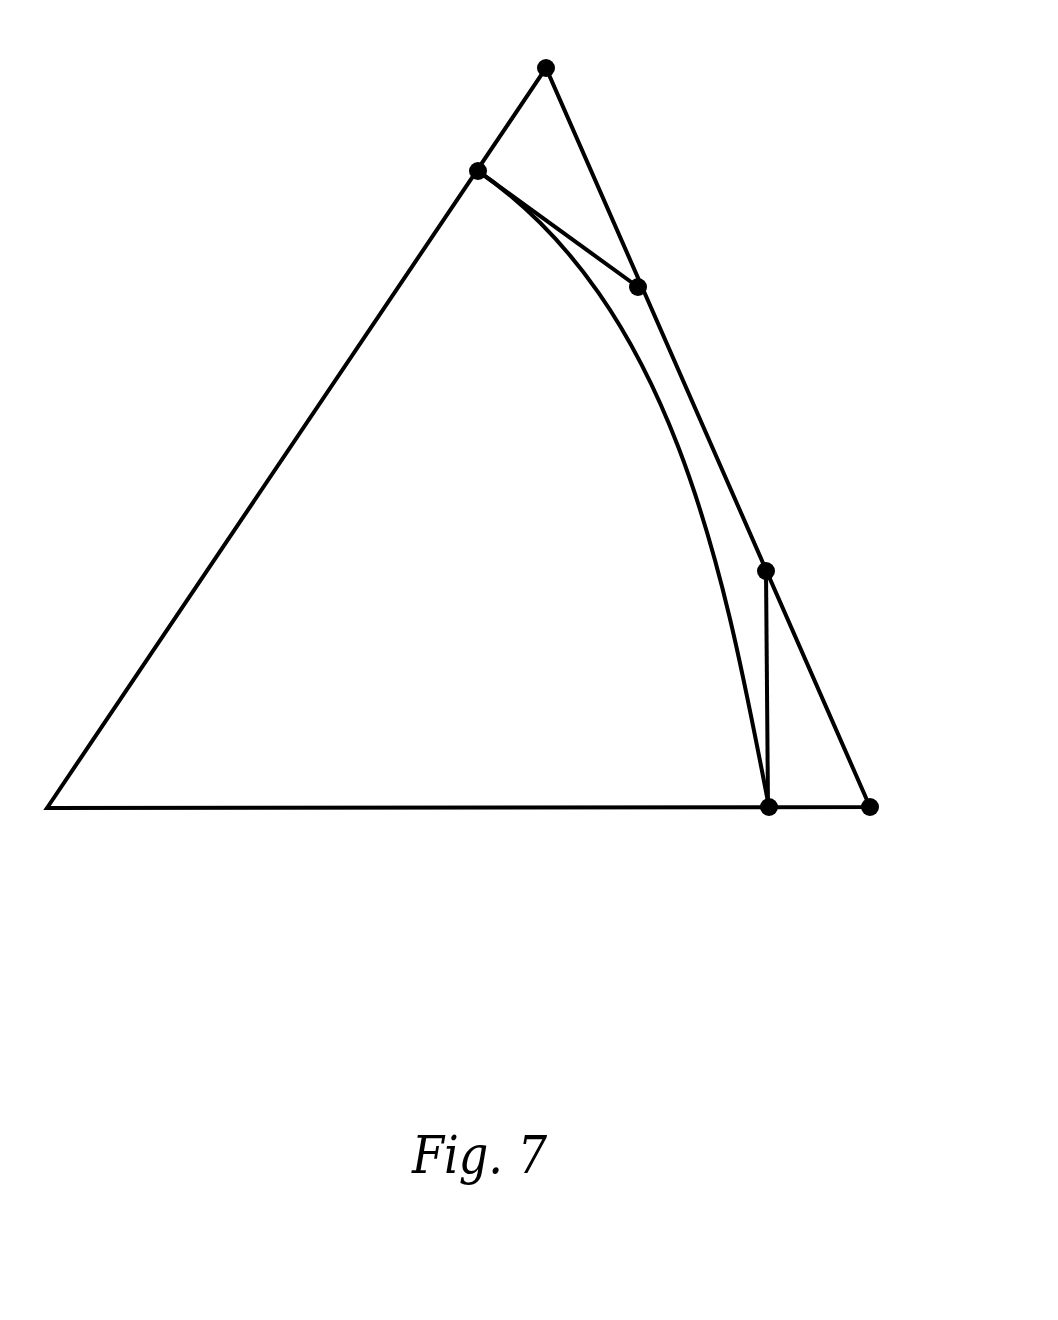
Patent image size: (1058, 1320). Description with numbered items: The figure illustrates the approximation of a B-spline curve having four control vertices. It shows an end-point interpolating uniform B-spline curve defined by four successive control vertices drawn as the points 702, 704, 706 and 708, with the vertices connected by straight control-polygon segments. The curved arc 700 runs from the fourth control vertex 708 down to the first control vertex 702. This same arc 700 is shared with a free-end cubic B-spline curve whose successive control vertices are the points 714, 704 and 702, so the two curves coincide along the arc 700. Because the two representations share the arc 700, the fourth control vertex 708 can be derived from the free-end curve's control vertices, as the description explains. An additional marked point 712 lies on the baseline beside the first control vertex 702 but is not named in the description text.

The arc 700 is at (668, 435).
The control vertex C0 702 is at (768, 816).
The control vertex C1 704 is at (775, 567).
The control vertex C2 706 is at (648, 283).
The control vertex C3 708 is at (466, 171).
The fifth point 712 is at (868, 816).
The control vertex C'3 714 is at (556, 65).